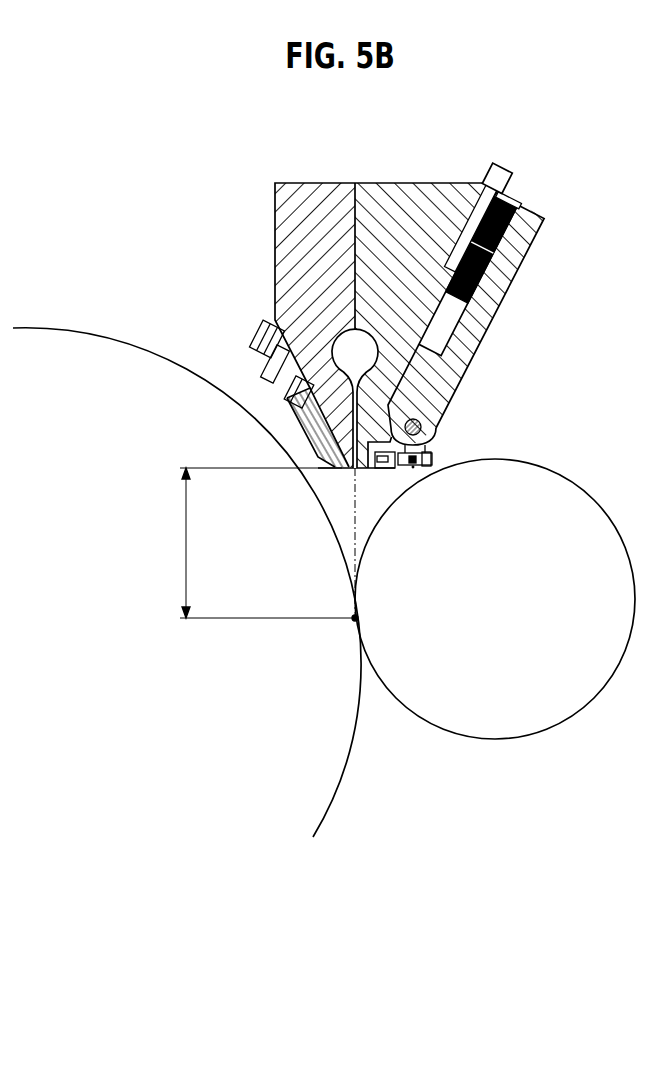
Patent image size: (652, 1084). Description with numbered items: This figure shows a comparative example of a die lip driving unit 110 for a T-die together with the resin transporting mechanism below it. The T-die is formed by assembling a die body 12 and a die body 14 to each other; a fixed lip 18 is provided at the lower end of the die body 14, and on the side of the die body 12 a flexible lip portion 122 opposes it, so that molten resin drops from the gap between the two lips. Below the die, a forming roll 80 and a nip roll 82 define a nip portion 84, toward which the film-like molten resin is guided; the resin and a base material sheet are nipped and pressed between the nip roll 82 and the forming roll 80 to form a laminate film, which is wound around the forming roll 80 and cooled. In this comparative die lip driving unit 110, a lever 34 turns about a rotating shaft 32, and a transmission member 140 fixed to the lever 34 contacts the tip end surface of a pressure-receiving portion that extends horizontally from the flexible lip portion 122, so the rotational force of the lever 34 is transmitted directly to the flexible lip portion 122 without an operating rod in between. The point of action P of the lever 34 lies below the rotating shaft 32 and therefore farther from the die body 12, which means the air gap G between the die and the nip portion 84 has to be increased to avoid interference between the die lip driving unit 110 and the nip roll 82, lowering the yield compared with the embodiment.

The die body 12 is at (420, 183).
The die body 14 is at (300, 185).
The fixed lip 18 is at (340, 468).
The rotating shaft 32 is at (428, 425).
The lever 34 is at (490, 327).
The forming roll 80 is at (107, 338).
The nip roll 82 is at (586, 488).
The nip portion 84 is at (354, 619).
The bolt 110 is at (526, 186).
The flexible lip portion 122 is at (372, 470).
The transmission member 140 is at (443, 458).
The point of action P is at (413, 467).
The air gap G is at (260, 543).